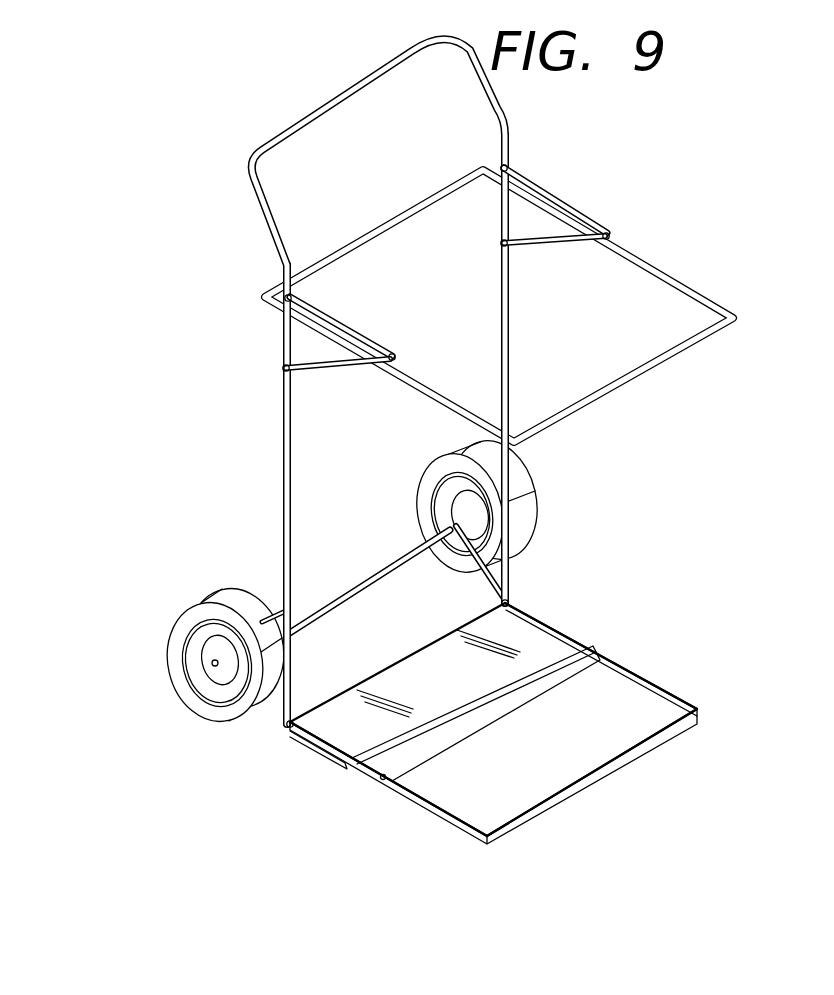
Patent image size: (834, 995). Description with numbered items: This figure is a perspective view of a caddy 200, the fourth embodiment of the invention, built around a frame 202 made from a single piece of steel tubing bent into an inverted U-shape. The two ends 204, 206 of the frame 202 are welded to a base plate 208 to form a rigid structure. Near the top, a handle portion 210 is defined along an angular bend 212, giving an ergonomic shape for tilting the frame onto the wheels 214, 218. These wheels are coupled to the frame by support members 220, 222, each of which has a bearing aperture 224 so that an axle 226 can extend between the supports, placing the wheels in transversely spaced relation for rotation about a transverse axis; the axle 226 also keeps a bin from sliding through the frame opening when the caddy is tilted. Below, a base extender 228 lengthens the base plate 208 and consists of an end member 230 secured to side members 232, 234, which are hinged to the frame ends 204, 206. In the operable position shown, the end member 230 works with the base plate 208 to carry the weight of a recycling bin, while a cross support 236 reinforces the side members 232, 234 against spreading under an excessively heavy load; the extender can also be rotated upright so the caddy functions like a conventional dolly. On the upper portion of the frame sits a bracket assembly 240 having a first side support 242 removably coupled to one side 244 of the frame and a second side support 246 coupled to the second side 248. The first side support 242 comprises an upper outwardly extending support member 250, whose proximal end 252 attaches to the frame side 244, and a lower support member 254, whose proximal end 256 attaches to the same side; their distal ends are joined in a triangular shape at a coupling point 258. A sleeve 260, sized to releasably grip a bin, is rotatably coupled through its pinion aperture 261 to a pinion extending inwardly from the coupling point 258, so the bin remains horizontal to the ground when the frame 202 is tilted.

The caddy 200 is at (258, 118).
The frame 202 is at (272, 485).
The end 204 is at (290, 733).
The end 206 is at (512, 603).
The base plate 208 is at (333, 770).
The handle portion 210 is at (393, 66).
The angular bend 212 is at (510, 128).
The wheel 214 is at (535, 520).
The wheel 218 is at (185, 706).
The support member 220 is at (458, 503).
The support member 222 is at (272, 610).
The bearing aperture 224 is at (450, 560).
The axle 226 is at (312, 620).
The base extender 228 is at (702, 738).
The end member 230 is at (578, 797).
The side member 232 is at (632, 665).
The side member 234 is at (456, 832).
The cross support 236 is at (470, 735).
The bracket assembly 240 is at (615, 211).
The first side support 242 is at (374, 312).
The side of the frame 244 is at (282, 412).
The second side support 246 is at (592, 180).
The second side of the frame 248 is at (517, 342).
The upper outwardly extending support member 250 is at (398, 345).
The proximal end 252 is at (302, 297).
The lower support member 254 is at (322, 378).
The proximal end 256 is at (280, 368).
The coupling point 258 is at (398, 360).
The sleeve 260 is at (680, 385).
The pinion aperture 261 is at (600, 238).